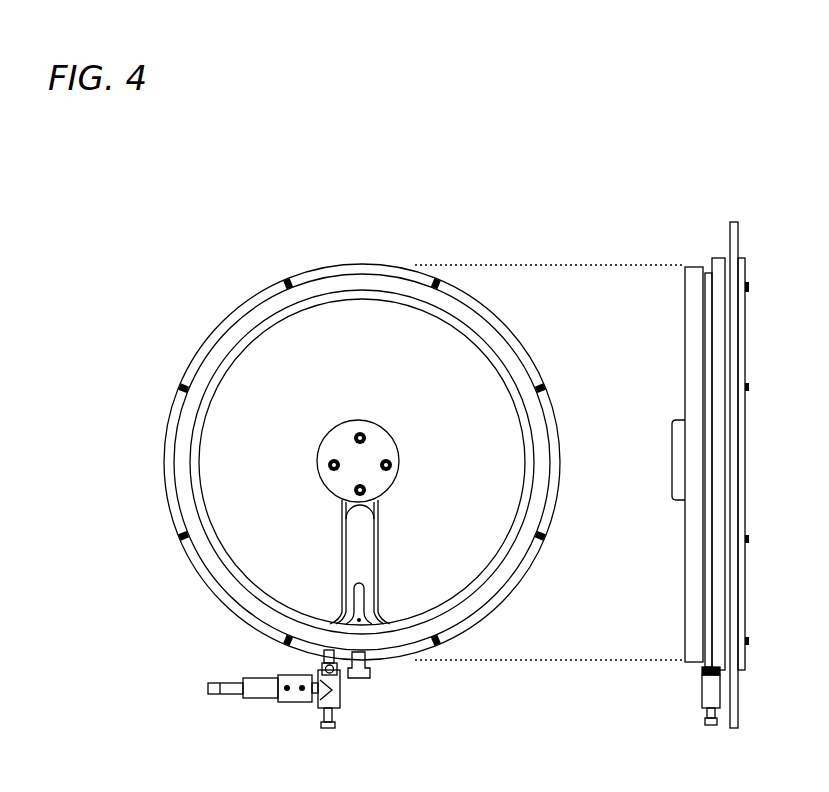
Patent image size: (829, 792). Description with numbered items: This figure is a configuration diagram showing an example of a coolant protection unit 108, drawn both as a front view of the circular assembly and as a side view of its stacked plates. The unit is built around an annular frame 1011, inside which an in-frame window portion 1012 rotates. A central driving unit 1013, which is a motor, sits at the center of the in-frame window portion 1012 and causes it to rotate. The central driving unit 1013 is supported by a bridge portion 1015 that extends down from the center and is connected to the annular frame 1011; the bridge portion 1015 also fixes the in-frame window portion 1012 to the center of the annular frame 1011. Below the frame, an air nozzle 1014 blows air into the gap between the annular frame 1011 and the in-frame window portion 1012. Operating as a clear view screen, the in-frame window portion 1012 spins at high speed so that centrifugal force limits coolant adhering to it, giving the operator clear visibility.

The coolant protection unit 108 is at (427, 226).
The annular frame 1011 is at (462, 322).
The in-frame window portion 1012 is at (268, 372).
The central driving unit 1013 is at (390, 447).
The air nozzle 1014 is at (294, 692).
The bridge portion 1015 is at (370, 568).